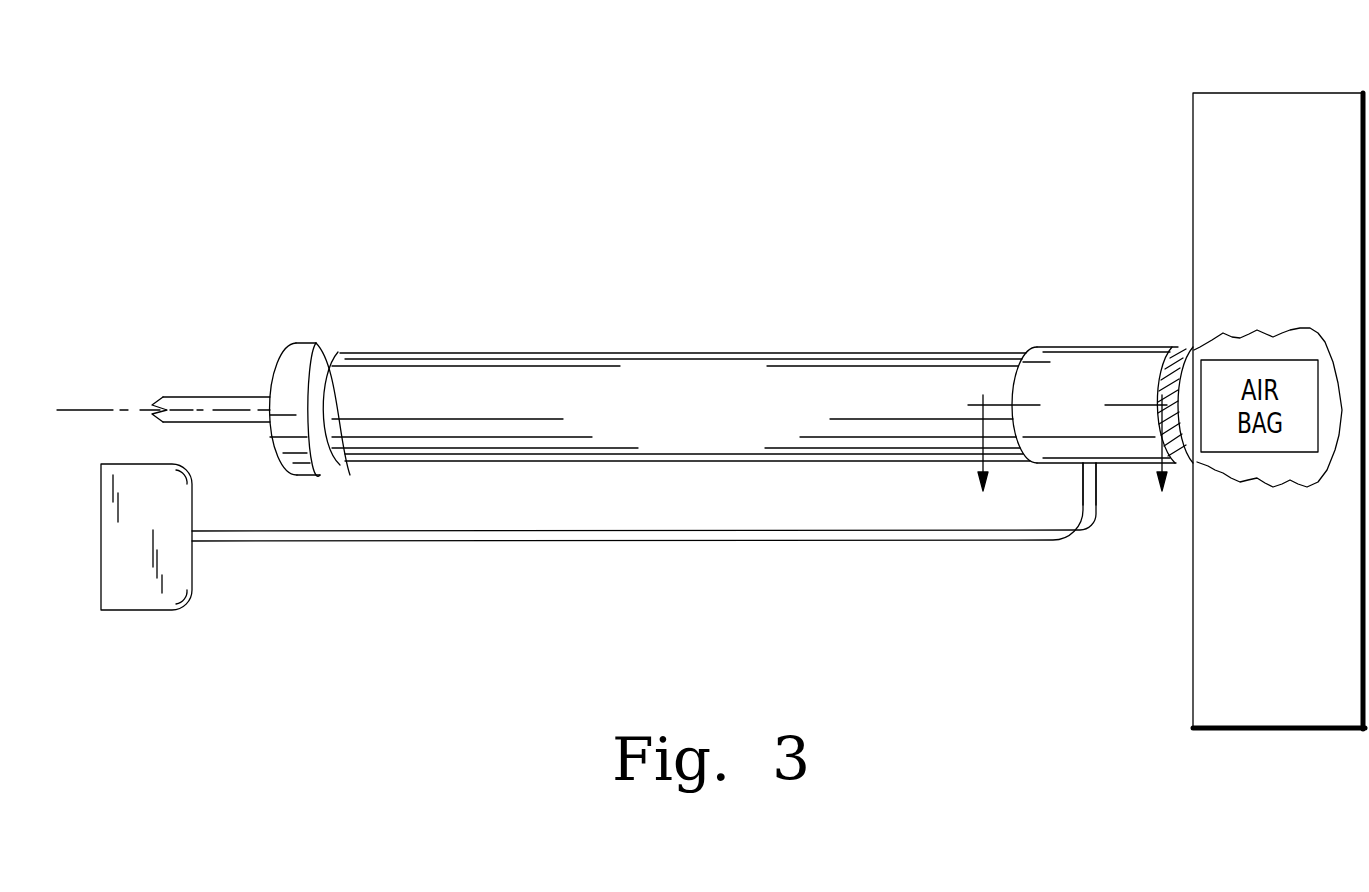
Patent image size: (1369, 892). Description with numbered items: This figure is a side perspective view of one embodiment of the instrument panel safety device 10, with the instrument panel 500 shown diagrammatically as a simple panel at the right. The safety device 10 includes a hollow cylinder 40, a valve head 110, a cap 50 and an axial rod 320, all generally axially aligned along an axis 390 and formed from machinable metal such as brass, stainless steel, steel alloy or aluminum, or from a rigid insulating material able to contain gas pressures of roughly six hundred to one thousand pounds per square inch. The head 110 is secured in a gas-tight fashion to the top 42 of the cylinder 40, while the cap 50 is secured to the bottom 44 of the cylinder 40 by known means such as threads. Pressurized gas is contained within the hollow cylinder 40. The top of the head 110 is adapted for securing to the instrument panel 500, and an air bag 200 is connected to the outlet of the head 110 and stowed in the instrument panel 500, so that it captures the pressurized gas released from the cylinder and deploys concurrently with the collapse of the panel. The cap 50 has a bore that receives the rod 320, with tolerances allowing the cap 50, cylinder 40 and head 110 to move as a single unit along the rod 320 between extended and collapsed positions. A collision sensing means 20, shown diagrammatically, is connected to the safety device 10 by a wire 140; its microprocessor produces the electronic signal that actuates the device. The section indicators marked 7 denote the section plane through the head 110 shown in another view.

The instrument panel safety device 10 is at (754, 284).
The collision sensing means 20 is at (138, 464).
The hollow cylinder 40 is at (395, 463).
The top of cylinder 42 is at (988, 352).
The bottom of cylinder 44 is at (340, 347).
The cap 50 is at (303, 464).
The valve head 110 is at (1113, 463).
The wire 140 is at (885, 541).
The air bag 200 is at (1172, 350).
The axial rod 320 is at (213, 397).
The axis 390 is at (148, 405).
The instrument panel 500 is at (1276, 92).
The section line 7- 7 is at (1069, 459).